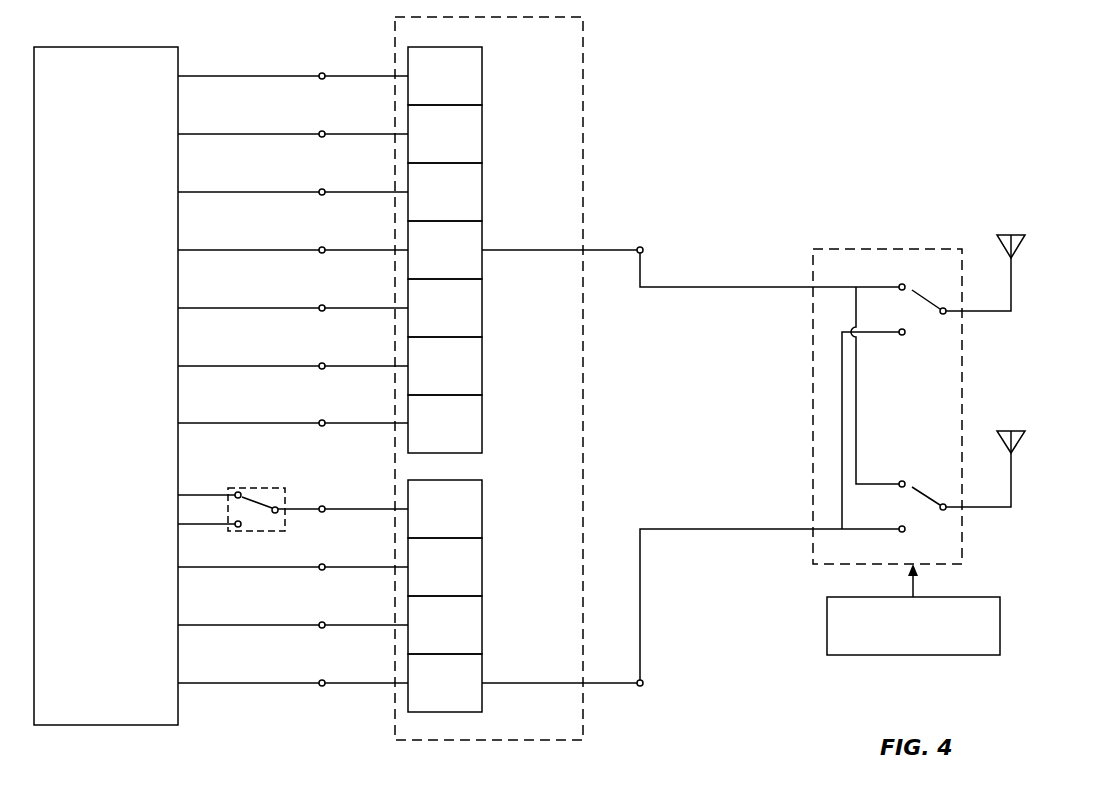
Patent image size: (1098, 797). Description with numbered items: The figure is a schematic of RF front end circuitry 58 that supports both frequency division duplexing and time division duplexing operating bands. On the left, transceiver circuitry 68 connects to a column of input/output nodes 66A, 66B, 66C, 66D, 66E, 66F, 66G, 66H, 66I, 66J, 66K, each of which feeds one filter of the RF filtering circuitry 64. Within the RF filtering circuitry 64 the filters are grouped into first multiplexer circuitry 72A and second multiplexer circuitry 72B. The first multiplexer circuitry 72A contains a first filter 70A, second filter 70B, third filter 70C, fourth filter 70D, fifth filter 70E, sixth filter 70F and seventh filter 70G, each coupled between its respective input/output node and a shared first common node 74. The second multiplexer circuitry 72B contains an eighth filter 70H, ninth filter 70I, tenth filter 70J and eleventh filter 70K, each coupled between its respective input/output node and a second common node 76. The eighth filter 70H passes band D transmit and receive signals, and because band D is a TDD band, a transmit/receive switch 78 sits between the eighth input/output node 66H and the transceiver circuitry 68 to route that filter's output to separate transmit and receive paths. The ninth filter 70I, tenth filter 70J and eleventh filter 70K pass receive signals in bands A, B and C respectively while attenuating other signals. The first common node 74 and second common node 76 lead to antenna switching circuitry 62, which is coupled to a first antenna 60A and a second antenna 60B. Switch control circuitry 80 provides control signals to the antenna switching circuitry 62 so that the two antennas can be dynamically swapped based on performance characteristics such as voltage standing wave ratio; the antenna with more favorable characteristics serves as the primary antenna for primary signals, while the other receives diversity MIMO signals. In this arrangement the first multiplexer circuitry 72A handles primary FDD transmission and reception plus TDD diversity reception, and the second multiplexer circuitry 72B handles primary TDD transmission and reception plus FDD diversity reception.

The RF front end circuitry 58 is at (856, 86).
The first antenna 60A is at (1022, 236).
The second antenna 60B is at (1022, 432).
The antenna switching circuitry 62 is at (962, 545).
The RF filtering circuitry 64 is at (583, 61).
The first input/output node 66A is at (324, 73).
The second input/output node 66B is at (324, 131).
The third input/output node 66C is at (324, 189).
The fourth input/output node 66D is at (324, 247).
The fifth input/output node 66E is at (324, 305).
The sixth input/output node 66F is at (324, 363).
The seventh input/output node 66G is at (324, 420).
The eighth input/output node 66H is at (324, 506).
The ninth input/output node 66I is at (324, 564).
The tenth input/output node 66J is at (324, 622).
The eleventh input/output node 66K is at (324, 680).
The transceiver circuitry 68 is at (97, 412).
The first filter 70A is at (483, 73).
The second filter 70B is at (483, 131).
The third filter 70C is at (483, 189).
The fourth filter 70D is at (483, 247).
The fifth filter 70E is at (483, 305).
The sixth filter 70F is at (483, 363).
The seventh filter 70G is at (483, 421).
The eighth filter 70H is at (483, 506).
The ninth filter 70I is at (483, 564).
The tenth filter 70J is at (483, 622).
The eleventh filter 70K is at (483, 680).
The first multiplexer circuitry 72A is at (500, 44).
The second multiplexer circuitry 72B is at (500, 710).
The first common node 74 is at (643, 247).
The second common node 76 is at (643, 686).
The transmit/receive switch 78 is at (262, 534).
The switch control circuitry 80 is at (904, 644).